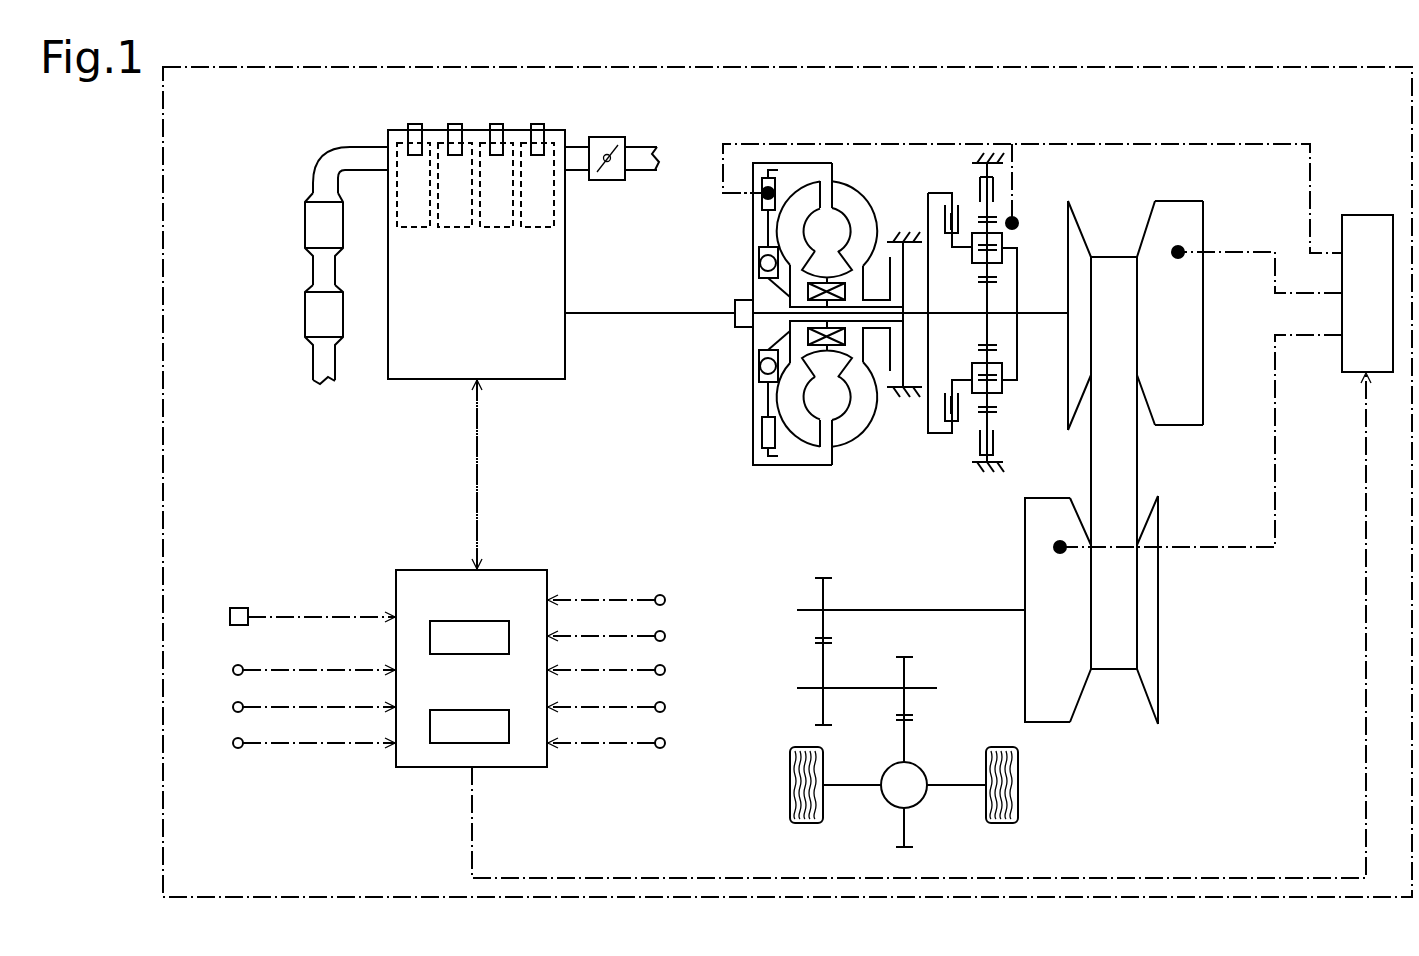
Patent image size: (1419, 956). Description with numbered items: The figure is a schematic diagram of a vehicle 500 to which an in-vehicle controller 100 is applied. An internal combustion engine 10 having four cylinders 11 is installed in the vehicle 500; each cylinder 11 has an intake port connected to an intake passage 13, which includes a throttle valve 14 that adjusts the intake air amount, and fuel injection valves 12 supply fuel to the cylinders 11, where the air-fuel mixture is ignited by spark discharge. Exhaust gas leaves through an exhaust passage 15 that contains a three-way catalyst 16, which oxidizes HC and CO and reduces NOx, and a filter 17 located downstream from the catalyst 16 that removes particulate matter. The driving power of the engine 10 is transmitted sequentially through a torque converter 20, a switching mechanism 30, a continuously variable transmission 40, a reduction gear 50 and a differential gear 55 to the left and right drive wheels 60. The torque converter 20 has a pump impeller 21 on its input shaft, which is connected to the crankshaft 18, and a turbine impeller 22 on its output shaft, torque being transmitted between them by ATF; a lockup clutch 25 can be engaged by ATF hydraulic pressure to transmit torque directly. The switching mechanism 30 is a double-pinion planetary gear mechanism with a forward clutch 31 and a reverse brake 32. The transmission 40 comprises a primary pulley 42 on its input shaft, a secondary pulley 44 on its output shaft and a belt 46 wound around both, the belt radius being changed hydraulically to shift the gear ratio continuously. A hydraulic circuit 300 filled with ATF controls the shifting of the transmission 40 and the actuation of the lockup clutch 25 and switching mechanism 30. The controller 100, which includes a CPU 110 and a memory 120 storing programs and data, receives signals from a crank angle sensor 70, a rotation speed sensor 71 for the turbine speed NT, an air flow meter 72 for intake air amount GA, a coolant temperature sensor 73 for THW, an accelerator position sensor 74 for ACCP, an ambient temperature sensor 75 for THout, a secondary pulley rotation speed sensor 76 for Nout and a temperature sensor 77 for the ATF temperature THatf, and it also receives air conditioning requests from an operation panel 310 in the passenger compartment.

The vehicle 500 is at (230, 67).
The internal combustion engine 10 is at (400, 393).
The cylinder 11 is at (525, 228).
The fuel injection valve 12 is at (537, 123).
The intake passage 13 is at (641, 146).
The throttle valve 14 is at (598, 136).
The exhaust passage 15 is at (357, 146).
The three-way catalyst 16 is at (305, 224).
The filter 17 is at (305, 316).
The crankshaft 18 is at (644, 316).
The torque converter 20 is at (740, 266).
The pump impeller 21 is at (853, 428).
The turbine impeller 22 is at (802, 430).
The lockup clutch 25 is at (760, 432).
The switching mechanism 30 is at (952, 482).
The forward clutch 31 is at (967, 420).
The reverse brake 32 is at (1000, 443).
The continuously variable transmission 40 is at (1213, 207).
The primary pulley 42 is at (1204, 283).
The secondary pulley 44 is at (1025, 580).
The belt 46 is at (1138, 460).
The reduction gear 50 is at (802, 660).
The differential gear 55 is at (873, 814).
The drive wheel 60 is at (790, 782).
The crank angle sensor 70 is at (665, 600).
The rotation speed sensor 71 is at (665, 636).
The air flow meter 72 is at (665, 670).
The coolant temperature sensor 73 is at (665, 707).
The accelerator position sensor 74 is at (665, 743).
The ambient temperature sensor 75 is at (233, 743).
The secondary pulley rotation speed sensor 76 is at (233, 707).
The temperature sensor 77 is at (233, 670).
The in-vehicle controller 100 is at (396, 590).
The central processing unit 110 is at (458, 620).
The memory 120 is at (458, 709).
The hydraulic circuit 300 is at (1368, 214).
The operation panel 310 is at (232, 608).